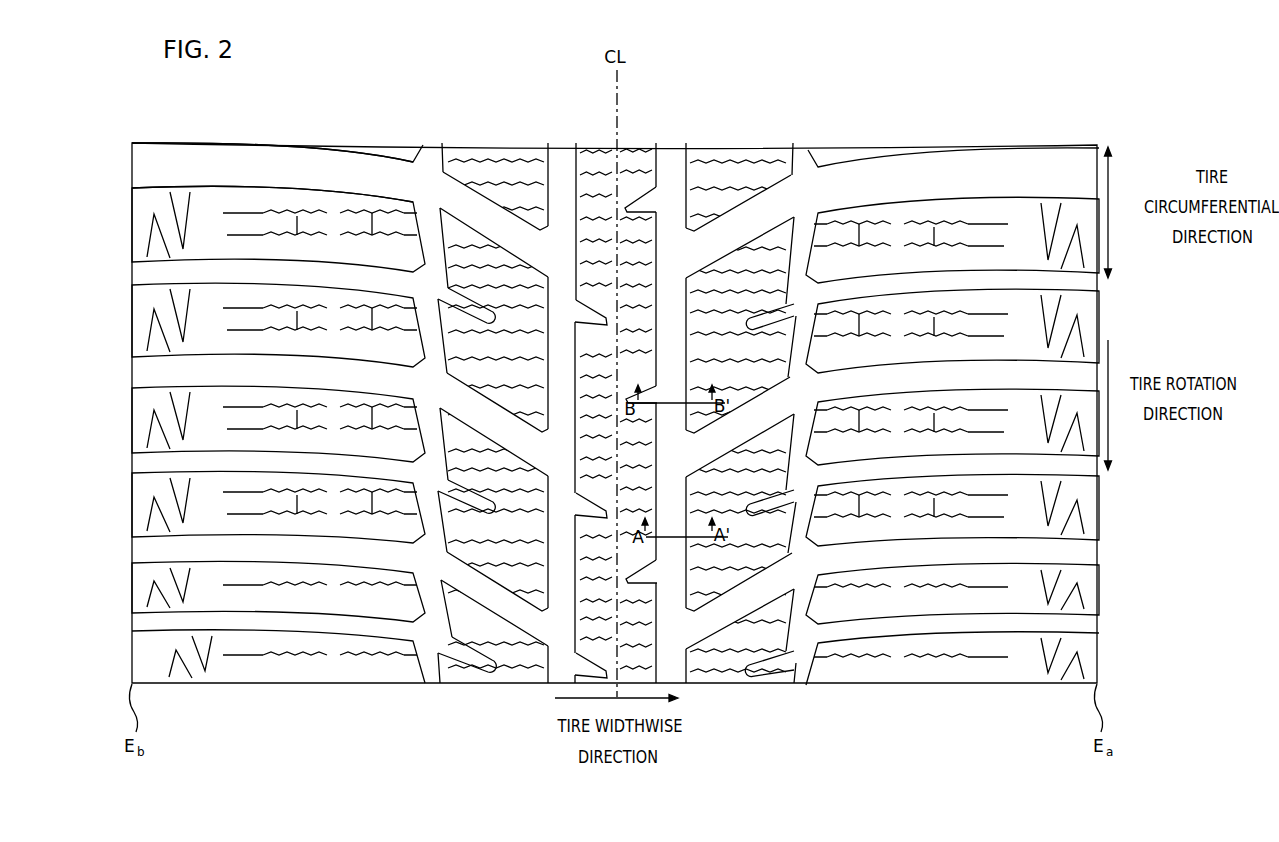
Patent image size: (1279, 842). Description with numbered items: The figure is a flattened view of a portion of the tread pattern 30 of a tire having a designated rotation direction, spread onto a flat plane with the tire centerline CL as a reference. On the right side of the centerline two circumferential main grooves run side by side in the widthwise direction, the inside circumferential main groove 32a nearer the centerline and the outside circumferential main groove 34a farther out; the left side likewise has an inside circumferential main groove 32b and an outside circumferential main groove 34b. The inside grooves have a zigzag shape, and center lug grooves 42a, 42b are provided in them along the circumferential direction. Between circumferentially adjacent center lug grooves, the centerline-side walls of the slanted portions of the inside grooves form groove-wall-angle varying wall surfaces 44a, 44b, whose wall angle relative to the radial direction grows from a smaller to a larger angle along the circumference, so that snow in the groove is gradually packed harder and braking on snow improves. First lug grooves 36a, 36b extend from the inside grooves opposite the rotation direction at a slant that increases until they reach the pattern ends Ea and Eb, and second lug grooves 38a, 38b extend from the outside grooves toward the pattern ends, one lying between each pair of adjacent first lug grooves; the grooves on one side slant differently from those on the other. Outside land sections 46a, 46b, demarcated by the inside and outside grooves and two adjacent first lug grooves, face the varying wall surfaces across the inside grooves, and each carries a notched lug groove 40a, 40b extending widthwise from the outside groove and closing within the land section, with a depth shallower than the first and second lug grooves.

The tread pattern 30 is at (1027, 108).
The inside circumferential main groove 32a is at (663, 175).
The inside circumferential main groove 32b is at (553, 163).
The outside circumferential main groove 34a is at (803, 163).
The outside circumferential main groove 34b is at (430, 162).
The first lug groove 36a is at (742, 227).
The first lug groove 36b is at (333, 178).
The second lug groove 38a is at (978, 282).
The second lug groove 38b is at (278, 268).
The notched lug groove 40a is at (766, 317).
The notched lug groove 40b is at (464, 305).
The center lug groove 42a is at (632, 203).
The center lug groove 42b is at (600, 165).
The groove-wall-angle varying wall surface 44a is at (658, 208).
The groove-wall-angle varying wall surface 44b is at (592, 318).
The outside land section 46a is at (741, 375).
The outside land section 46b is at (481, 375).